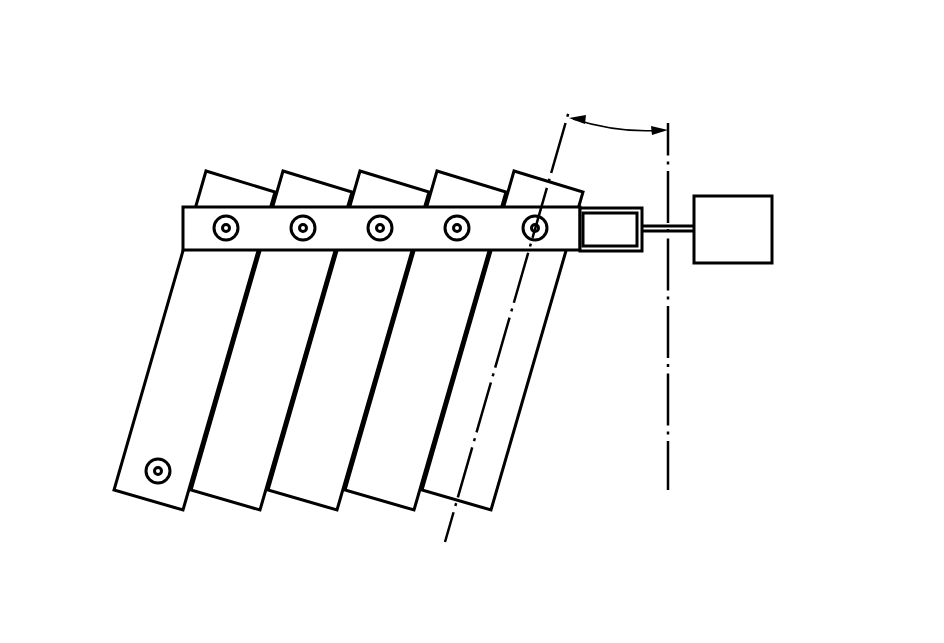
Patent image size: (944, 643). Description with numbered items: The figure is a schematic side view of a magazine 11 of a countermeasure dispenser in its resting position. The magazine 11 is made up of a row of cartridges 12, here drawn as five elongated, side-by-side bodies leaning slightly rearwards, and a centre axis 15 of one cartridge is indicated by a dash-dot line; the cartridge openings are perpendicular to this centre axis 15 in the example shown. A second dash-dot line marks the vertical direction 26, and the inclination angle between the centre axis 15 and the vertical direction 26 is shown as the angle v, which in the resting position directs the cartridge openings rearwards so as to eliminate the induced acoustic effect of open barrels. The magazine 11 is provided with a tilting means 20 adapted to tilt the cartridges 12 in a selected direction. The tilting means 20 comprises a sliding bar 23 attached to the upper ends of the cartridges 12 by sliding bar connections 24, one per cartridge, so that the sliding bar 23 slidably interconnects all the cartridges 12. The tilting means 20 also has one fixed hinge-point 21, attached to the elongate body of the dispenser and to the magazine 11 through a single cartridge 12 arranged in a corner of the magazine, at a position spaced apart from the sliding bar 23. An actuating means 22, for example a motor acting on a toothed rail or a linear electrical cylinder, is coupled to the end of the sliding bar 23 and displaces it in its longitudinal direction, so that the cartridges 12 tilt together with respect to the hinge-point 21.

The magazine 11 is at (196, 96).
The cartridge 12 is at (187, 340).
The centre axis 15 is at (448, 529).
The tilting means 20 is at (136, 138).
The hinge-point 21 is at (147, 472).
The actuating means 22 is at (772, 228).
The sliding bar 23 is at (183, 228).
The sliding bar connection 24 is at (226, 227).
The vertical direction 26 is at (668, 404).